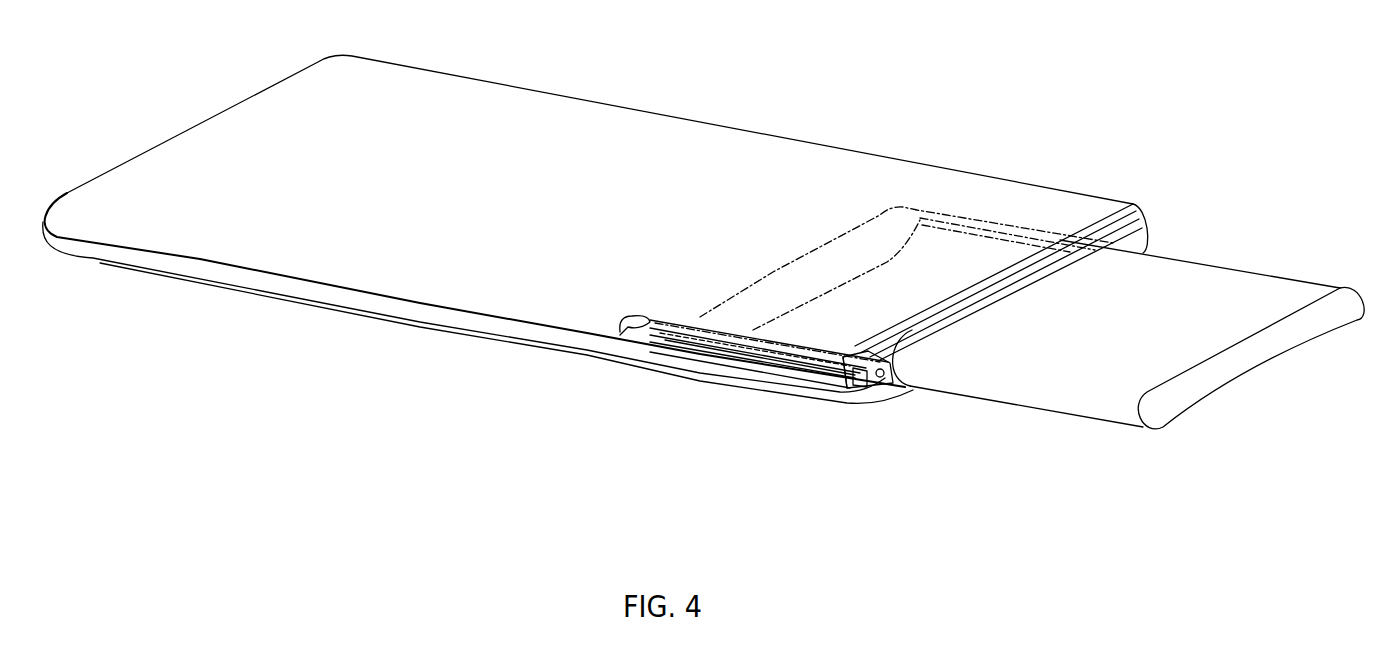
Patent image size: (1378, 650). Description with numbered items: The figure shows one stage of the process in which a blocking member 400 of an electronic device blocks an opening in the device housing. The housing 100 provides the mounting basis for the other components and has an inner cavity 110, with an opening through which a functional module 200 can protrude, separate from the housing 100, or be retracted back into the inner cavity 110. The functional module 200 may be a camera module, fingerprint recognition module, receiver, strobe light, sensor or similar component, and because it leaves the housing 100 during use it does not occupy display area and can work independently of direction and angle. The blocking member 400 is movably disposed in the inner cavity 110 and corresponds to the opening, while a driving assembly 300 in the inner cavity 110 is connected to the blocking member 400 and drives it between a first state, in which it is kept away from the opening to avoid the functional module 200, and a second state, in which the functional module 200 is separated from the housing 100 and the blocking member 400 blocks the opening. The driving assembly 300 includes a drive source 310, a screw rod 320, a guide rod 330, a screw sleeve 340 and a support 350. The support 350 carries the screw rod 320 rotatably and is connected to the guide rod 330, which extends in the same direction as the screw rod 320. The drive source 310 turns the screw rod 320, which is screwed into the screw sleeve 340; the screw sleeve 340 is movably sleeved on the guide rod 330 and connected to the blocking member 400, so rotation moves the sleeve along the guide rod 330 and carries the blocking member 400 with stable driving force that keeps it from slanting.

The housing 100 is at (675, 153).
The inner cavity 110 is at (932, 277).
The functional module 200 is at (1132, 385).
The driving assembly 300 is at (721, 435).
The drive source 310 is at (630, 327).
The screw rod 320 is at (688, 333).
The guide rod 330 is at (768, 360).
The screw sleeve 340 is at (866, 414).
The support 350 is at (825, 383).
The blocking member 400 is at (853, 262).